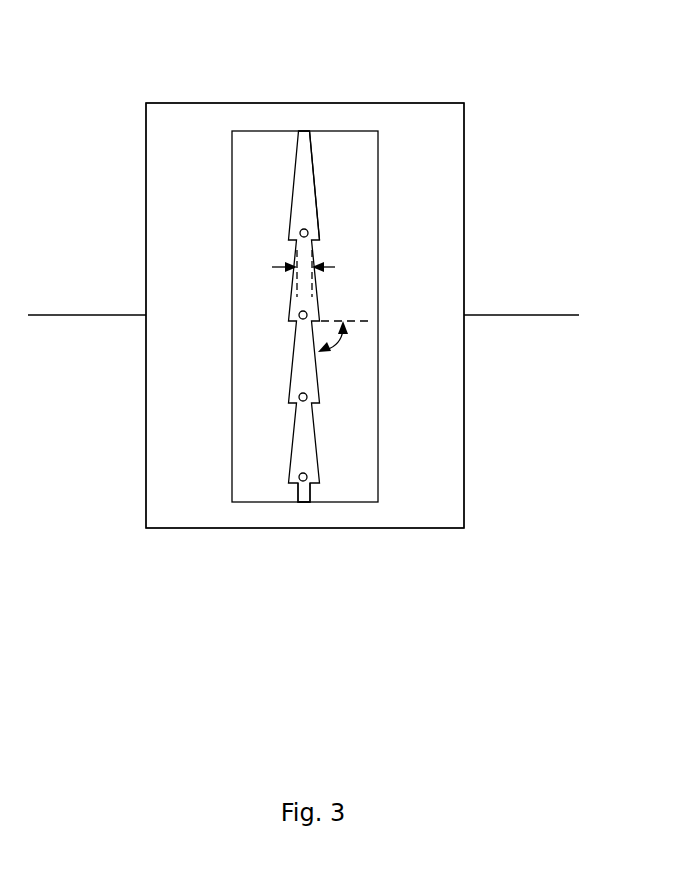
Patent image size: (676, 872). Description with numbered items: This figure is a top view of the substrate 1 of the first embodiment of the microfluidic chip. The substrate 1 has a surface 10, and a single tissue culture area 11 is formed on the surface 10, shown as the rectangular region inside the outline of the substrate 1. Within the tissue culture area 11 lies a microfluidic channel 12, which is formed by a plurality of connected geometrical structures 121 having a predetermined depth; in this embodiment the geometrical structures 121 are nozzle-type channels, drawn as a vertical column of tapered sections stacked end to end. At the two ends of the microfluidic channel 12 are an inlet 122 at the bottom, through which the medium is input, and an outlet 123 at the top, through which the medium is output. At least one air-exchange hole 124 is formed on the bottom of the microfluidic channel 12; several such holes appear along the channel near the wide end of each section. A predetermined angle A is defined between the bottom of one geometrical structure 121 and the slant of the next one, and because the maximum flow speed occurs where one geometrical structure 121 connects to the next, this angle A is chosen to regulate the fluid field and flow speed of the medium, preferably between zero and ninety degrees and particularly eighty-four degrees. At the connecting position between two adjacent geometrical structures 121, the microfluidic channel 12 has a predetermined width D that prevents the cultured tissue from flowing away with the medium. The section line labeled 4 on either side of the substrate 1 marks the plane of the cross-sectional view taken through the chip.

The substrate 1 is at (473, 99).
The surface 10 is at (455, 498).
The tissue culture area 11 is at (378, 458).
The microfluidic channel 12 is at (284, 199).
The geometrical structure 121 is at (314, 178).
The inlet 122 is at (303, 503).
The outlet 123 is at (304, 131).
The air-exchange hole 124 is at (309, 230).
The section line 4- 4 is at (88, 320).
The predetermined width D is at (333, 267).
The predetermined angle A is at (336, 346).